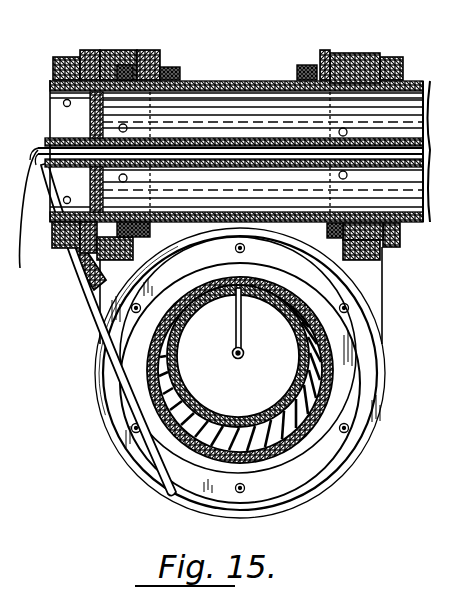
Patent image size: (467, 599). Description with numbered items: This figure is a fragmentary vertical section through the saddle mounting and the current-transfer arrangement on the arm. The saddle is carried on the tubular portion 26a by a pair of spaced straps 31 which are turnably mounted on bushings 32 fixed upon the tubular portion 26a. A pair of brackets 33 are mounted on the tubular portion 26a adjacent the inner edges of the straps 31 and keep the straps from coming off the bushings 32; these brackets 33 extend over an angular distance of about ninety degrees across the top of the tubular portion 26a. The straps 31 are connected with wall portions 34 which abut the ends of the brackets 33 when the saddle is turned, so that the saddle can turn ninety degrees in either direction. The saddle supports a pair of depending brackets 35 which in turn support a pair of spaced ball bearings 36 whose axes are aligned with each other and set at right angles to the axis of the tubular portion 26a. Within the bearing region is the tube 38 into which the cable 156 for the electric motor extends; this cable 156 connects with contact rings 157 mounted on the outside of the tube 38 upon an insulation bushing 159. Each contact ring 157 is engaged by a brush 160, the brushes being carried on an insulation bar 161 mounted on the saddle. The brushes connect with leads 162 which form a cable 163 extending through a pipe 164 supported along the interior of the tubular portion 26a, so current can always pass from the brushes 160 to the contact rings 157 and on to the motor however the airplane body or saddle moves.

The tubular portion 26a is at (253, 83).
The straps 31 is at (133, 52).
The bushings 32 is at (83, 53).
The brackets 33 is at (153, 50).
The wall portions 34 is at (240, 187).
The depending brackets 35 is at (310, 487).
The ball bearings 36 is at (298, 368).
The tube 38 is at (193, 403).
The cable 156 is at (246, 357).
The contact rings 157 is at (177, 495).
The insulation bushing 159 is at (218, 417).
The brush 160 is at (240, 373).
The insulation bar 161 is at (83, 300).
The leads 162 is at (30, 221).
The cable 163 is at (40, 147).
The pipe 164 is at (410, 140).